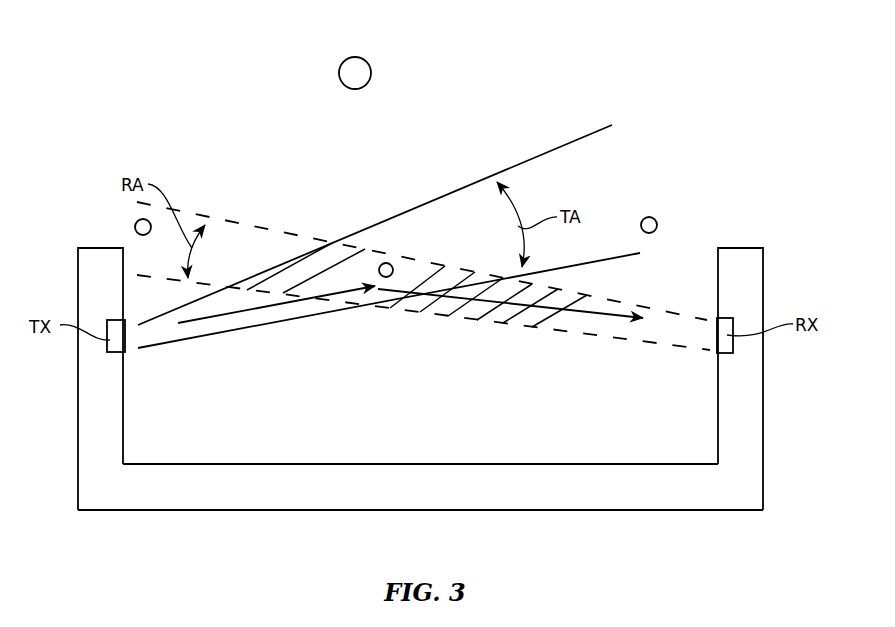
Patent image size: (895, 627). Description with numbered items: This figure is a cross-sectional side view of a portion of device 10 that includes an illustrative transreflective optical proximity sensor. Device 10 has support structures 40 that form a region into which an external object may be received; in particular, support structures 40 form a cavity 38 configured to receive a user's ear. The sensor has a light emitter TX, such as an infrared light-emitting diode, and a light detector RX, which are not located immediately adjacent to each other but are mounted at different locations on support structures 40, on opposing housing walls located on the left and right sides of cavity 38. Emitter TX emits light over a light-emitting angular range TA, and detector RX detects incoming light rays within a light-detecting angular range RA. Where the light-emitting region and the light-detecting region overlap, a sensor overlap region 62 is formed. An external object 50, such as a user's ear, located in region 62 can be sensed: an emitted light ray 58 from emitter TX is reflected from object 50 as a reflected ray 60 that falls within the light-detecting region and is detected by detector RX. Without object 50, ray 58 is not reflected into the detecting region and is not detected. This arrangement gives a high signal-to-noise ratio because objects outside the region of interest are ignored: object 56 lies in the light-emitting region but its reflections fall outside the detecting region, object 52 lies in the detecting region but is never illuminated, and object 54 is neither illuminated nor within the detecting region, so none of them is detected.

The device 10 is at (713, 87).
The cavity 38 is at (408, 418).
The support structures 40 is at (158, 375).
The object 50 is at (386, 263).
The object 52 is at (135, 227).
The object 54 is at (371, 73).
The object 56 is at (657, 224).
The light ray 58 is at (277, 306).
The reflected ray 60 is at (593, 314).
The region 62 is at (328, 265).